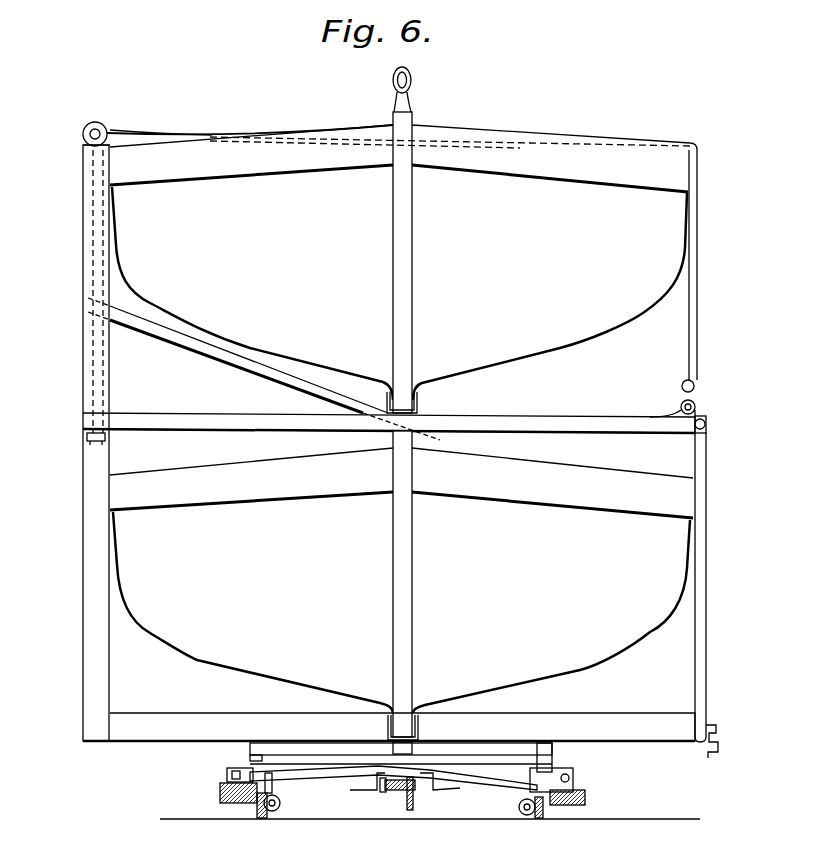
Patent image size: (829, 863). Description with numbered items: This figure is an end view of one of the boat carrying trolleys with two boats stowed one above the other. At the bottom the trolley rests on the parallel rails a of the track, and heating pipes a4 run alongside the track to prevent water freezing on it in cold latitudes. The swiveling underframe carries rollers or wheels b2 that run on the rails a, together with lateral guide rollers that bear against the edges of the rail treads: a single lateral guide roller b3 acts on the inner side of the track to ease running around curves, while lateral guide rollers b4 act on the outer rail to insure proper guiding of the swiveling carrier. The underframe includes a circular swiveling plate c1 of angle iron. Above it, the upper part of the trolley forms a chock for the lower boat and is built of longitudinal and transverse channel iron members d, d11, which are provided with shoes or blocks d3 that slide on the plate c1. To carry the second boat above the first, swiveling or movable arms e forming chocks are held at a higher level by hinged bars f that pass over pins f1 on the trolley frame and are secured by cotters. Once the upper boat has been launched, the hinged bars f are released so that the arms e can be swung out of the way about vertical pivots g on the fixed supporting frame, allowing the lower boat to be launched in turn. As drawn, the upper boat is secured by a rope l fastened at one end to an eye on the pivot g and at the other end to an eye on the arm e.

The rope l is at (157, 134).
The vertical pivot g is at (95, 375).
The swiveling arm e is at (233, 414).
The hinged bar f is at (697, 641).
The pin f1 is at (707, 748).
The longitudinal channel iron member d is at (389, 727).
The shoe or block d3 is at (255, 740).
The transverse channel iron member d11 is at (518, 724).
The circular swiveling plate c1 is at (337, 760).
The roller or wheel b2 is at (253, 773).
The lateral guide roller b3 is at (220, 795).
The lateral guide roller b4 is at (585, 803).
The rail a is at (262, 816).
The heating pipe a4 is at (277, 810).